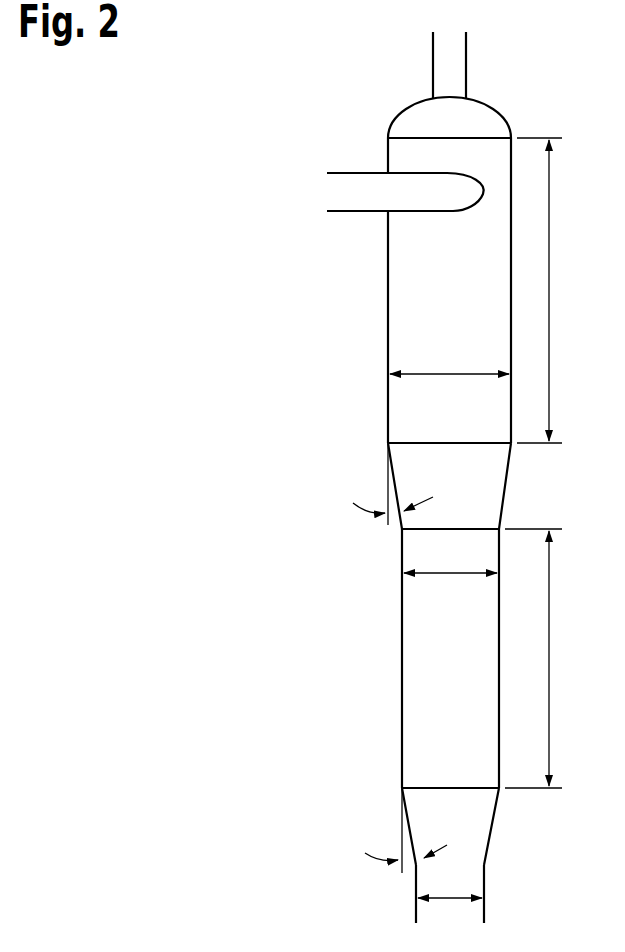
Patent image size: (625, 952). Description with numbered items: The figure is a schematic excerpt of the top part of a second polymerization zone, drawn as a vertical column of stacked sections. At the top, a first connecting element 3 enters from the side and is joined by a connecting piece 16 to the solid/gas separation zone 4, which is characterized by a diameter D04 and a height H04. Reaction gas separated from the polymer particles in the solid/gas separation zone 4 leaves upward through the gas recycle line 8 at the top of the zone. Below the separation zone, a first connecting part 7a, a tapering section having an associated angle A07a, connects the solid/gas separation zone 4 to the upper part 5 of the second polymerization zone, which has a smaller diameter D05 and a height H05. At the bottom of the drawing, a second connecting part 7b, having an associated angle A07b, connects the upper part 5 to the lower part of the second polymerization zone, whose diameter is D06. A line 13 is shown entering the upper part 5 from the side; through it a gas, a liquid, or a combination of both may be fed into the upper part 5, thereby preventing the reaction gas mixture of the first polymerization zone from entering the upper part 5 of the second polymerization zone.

The first connecting element 3 is at (365, 172).
The solid/gas separation zone 4 is at (388, 320).
The upper part of the second polymerization zone 5 is at (402, 606).
The first connecting part 7a is at (504, 487).
The second connecting part 7b is at (495, 830).
The gas recycle line 8 is at (467, 62).
The line 13 is at (400, 702).
The connecting piece 16 is at (462, 195).
The diameter of the solid/gas separation zone D04 is at (449, 357).
The diameter of the upper part of the second polymerization zone D05 is at (450, 557).
The diameter of the lower part of the second polymerization zone D06 is at (450, 919).
The height of the solid/gas separation zone H04 is at (563, 290).
The height of the upper part of the second polymerization zone H05 is at (557, 658).
The angle of the first connecting part A07a is at (369, 484).
The angle of the second connecting part A07b is at (383, 830).